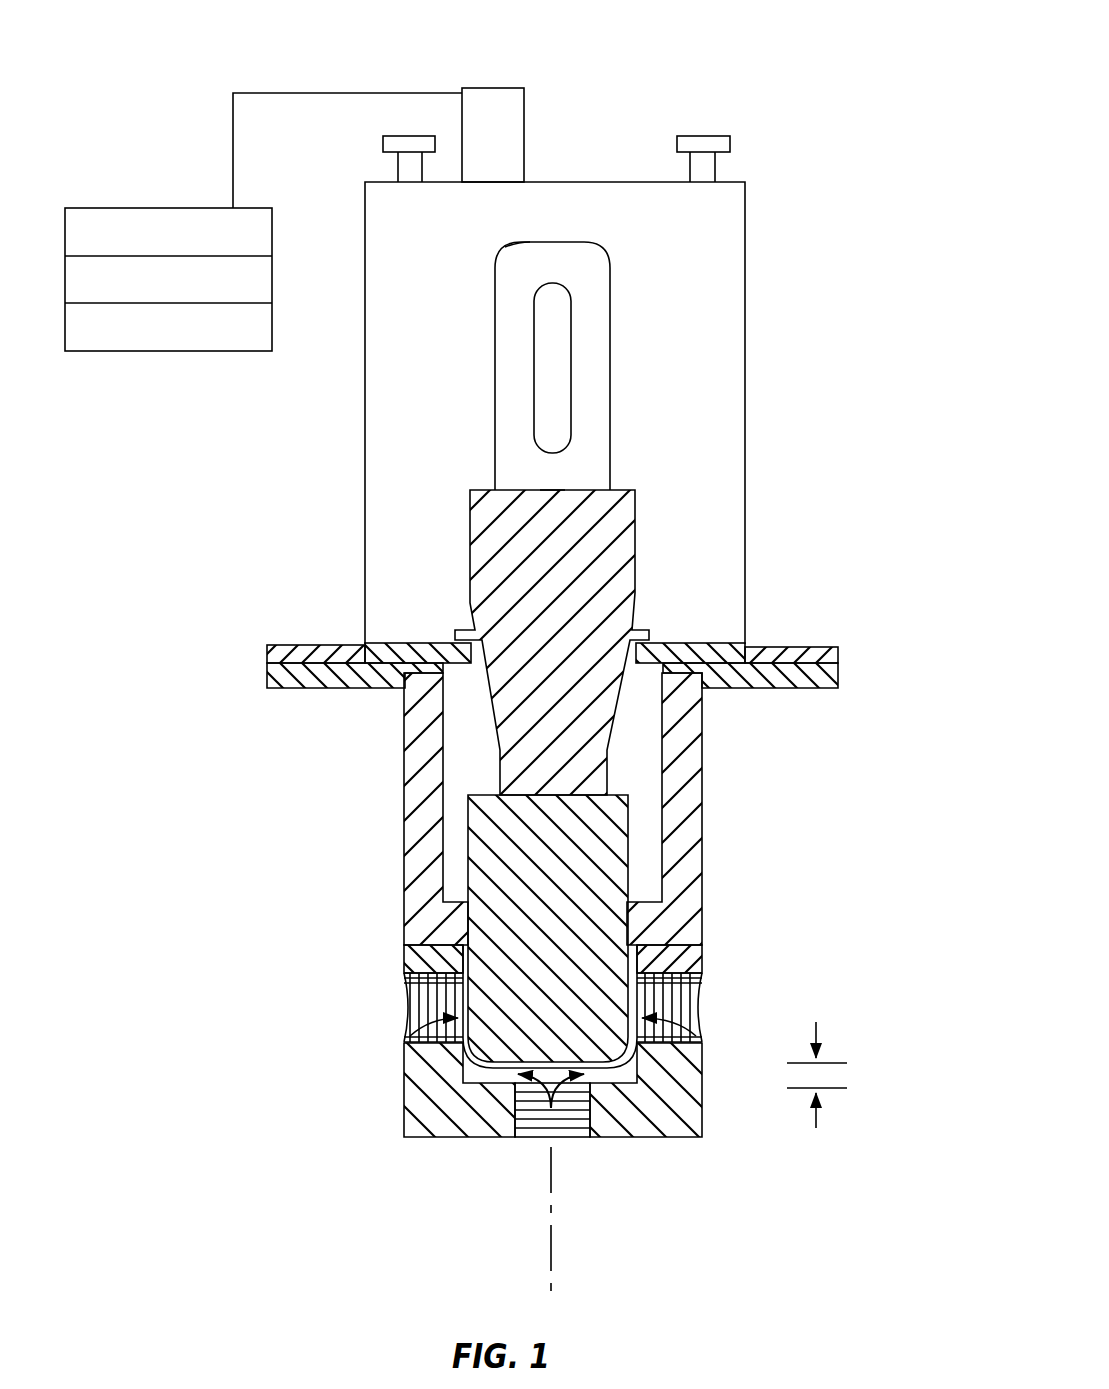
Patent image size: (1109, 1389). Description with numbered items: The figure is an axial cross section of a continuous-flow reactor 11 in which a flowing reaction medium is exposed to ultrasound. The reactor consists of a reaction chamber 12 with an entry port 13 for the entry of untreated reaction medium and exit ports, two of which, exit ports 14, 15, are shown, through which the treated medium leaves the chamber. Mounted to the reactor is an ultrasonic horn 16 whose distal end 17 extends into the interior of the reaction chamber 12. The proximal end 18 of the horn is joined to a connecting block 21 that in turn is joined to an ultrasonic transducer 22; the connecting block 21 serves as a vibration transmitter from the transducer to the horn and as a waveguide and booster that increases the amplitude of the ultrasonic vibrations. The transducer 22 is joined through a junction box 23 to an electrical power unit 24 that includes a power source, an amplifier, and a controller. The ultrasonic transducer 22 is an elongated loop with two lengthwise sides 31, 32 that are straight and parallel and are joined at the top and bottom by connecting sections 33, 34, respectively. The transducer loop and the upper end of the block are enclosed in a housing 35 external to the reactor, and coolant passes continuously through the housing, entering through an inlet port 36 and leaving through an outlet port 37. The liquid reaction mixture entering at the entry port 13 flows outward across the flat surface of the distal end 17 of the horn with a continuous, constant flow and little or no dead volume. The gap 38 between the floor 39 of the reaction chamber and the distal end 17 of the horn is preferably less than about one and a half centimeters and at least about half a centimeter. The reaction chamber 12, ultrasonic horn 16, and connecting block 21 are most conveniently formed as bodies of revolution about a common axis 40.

The continuous-flow reactor 11 is at (818, 58).
The reaction chamber 12 is at (253, 948).
The entry port 13 is at (537, 1152).
The exit port 14 is at (385, 1003).
The exit port 15 is at (712, 1003).
The ultrasonic horn 16 is at (613, 832).
The distal end 17 is at (507, 1065).
The proximal end 18 is at (483, 793).
The connecting block 21 is at (635, 548).
The ultrasonic transducer 22 is at (658, 287).
The junction box 23 is at (524, 105).
The electrical power unit 24 is at (157, 207).
The lengthwise side 31 is at (510, 383).
The lengthwise side 32 is at (585, 378).
The connecting section 33 is at (565, 275).
The connecting section 34 is at (552, 472).
The housing 35 is at (745, 455).
The inlet port 36 is at (383, 140).
The outlet port 37 is at (730, 140).
The gap 38 is at (843, 1077).
The floor 39 is at (603, 1077).
The common axis 40 is at (551, 1265).